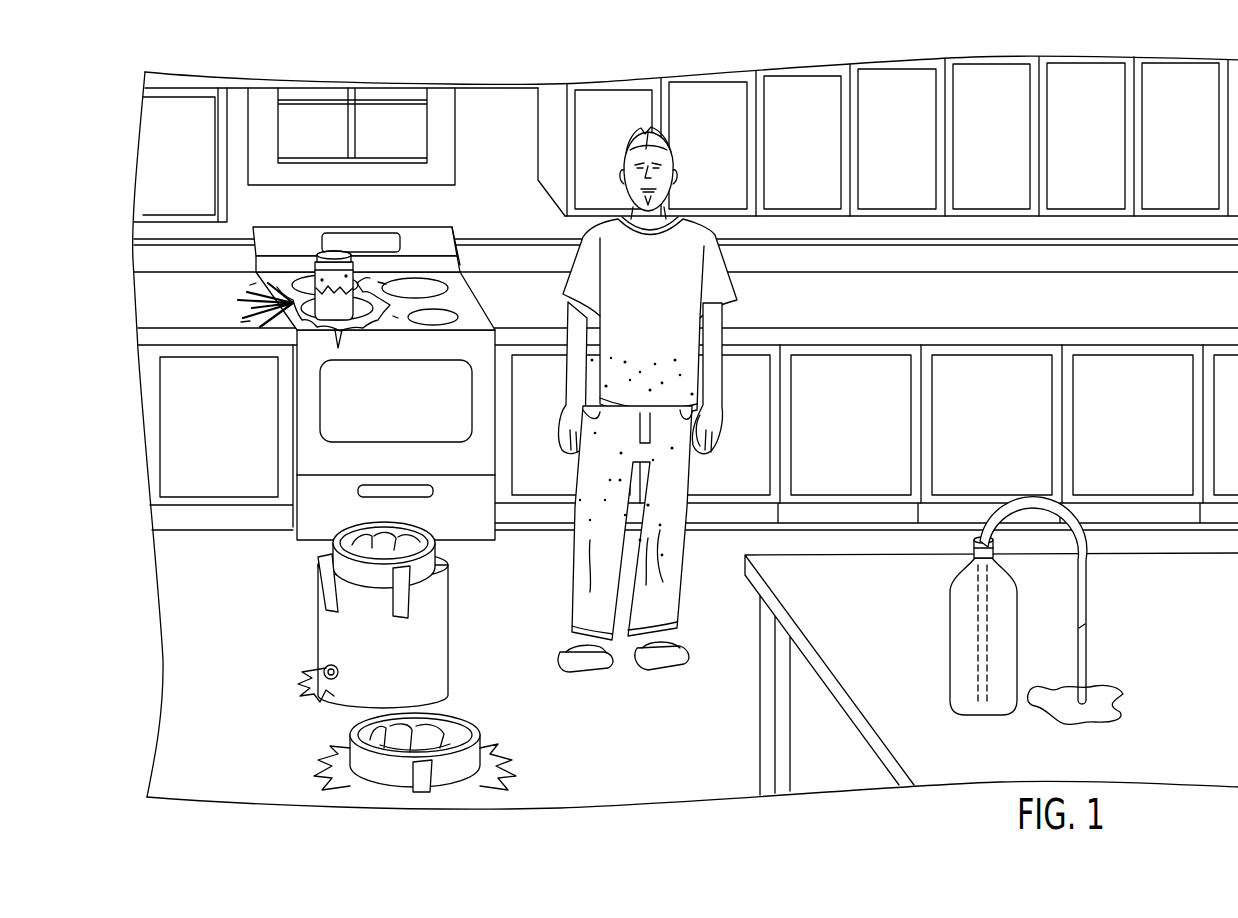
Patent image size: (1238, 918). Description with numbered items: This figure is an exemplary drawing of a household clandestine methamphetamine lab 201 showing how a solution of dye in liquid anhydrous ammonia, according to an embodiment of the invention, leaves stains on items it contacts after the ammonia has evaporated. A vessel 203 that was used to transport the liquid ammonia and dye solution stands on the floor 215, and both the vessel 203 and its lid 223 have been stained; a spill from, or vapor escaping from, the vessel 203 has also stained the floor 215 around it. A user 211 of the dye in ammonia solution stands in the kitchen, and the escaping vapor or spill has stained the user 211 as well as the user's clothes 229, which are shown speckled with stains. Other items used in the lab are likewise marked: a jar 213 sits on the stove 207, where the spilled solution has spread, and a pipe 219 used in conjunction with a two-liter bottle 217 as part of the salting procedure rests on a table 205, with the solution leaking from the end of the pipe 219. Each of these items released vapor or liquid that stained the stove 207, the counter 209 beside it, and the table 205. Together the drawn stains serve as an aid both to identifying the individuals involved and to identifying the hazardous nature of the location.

The clandestine methamphetamine lab 201 is at (680, 418).
The vessel 203 is at (443, 636).
The table 205 is at (867, 714).
The stove 207 is at (475, 316).
The counter 209 is at (207, 326).
The user 211 is at (644, 399).
The jar 213 is at (345, 321).
The floor 215 is at (170, 656).
The two-liter bottle 217 is at (958, 632).
The pipe 219 is at (1082, 596).
The lid 223 is at (478, 750).
The user's clothes 229 is at (577, 270).